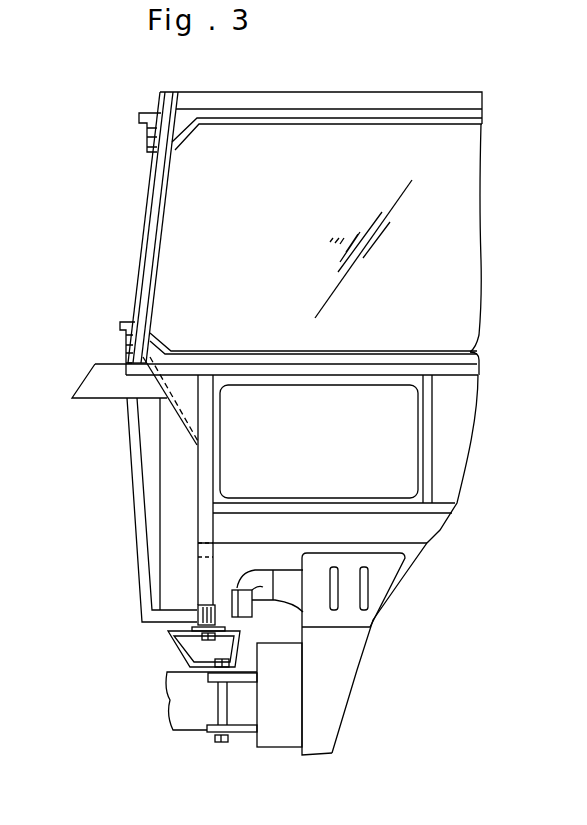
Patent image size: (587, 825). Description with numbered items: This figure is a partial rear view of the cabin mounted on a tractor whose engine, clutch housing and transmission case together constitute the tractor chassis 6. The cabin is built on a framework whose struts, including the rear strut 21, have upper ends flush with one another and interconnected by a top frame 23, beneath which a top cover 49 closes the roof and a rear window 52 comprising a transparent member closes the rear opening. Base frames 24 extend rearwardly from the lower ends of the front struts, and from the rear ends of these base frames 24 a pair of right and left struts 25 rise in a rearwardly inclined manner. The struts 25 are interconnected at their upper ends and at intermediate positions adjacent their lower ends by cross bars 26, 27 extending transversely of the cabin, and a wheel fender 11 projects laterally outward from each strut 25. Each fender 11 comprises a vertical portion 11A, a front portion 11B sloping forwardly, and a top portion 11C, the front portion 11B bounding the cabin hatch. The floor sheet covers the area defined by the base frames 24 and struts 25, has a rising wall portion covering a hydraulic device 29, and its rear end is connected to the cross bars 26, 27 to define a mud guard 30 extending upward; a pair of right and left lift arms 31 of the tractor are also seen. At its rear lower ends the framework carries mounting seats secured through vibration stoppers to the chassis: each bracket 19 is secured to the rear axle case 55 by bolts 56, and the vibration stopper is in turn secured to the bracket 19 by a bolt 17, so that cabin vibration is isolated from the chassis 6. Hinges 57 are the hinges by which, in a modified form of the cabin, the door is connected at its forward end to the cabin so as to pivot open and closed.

The tractor chassis 6 is at (350, 697).
The wheel fender 11 is at (118, 441).
The vertical portion 11A is at (168, 518).
The front portion 11B is at (132, 480).
The top portion 11C is at (88, 374).
The bolt 17 is at (195, 647).
The bracket 19 is at (178, 668).
The rear strut 21 is at (140, 262).
The top frame 23 is at (293, 118).
The base frame 24 is at (197, 603).
The strut 25 is at (205, 473).
The cross bar 26 is at (428, 522).
The cross bar 27 is at (327, 375).
The hydraulic device 29 is at (383, 597).
The mud guard 30 is at (460, 445).
The lift arm 31 is at (238, 608).
The top cover 49 is at (326, 100).
The rear window 52 is at (467, 285).
The rear axle case 55 is at (187, 733).
The bolt 56 is at (222, 742).
The hinge 57 is at (146, 157).